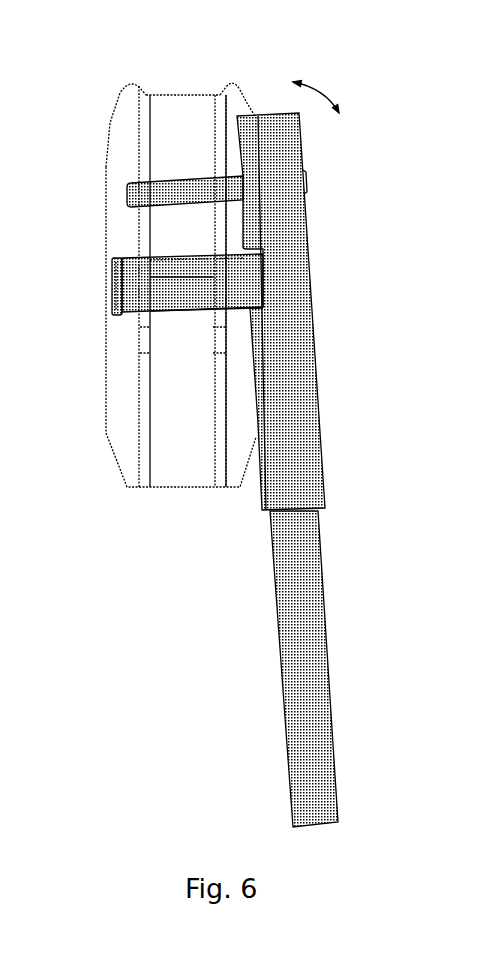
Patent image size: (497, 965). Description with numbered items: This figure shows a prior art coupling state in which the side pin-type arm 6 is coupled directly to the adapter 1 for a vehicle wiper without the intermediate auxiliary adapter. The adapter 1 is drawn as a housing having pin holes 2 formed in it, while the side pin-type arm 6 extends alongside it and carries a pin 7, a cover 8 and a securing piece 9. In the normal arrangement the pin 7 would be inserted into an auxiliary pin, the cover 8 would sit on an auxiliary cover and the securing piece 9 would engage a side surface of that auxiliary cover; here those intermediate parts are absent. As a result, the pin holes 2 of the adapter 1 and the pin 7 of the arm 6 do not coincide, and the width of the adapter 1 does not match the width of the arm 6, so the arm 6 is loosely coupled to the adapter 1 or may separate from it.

The adapter 1 is at (103, 113).
The pin holes 2 is at (127, 186).
The side pin-type arm 6 is at (312, 227).
The pin 7 is at (192, 163).
The cover 8 is at (183, 309).
The securing piece 9 is at (112, 292).